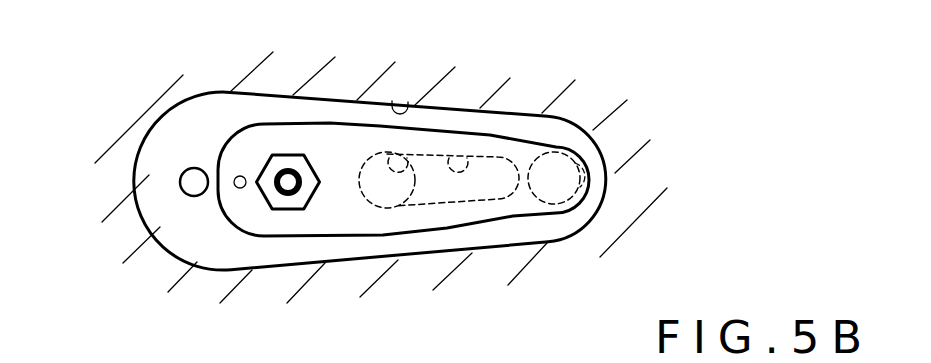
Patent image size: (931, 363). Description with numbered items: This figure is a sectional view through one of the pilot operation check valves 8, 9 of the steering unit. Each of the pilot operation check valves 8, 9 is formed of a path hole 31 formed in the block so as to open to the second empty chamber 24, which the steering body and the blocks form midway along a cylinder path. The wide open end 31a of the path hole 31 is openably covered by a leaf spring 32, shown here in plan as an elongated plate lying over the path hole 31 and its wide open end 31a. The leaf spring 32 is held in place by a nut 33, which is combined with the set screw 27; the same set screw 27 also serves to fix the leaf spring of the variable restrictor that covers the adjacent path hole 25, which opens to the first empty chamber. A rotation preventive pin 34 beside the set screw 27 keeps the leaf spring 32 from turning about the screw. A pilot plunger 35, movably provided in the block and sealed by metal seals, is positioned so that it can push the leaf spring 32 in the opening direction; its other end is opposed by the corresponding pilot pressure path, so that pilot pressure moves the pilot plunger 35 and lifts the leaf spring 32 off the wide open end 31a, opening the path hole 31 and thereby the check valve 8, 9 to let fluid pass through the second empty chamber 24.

The pilot operation check valve 8 is at (561, 141).
The pilot operation check valve 9 is at (561, 141).
The second empty chamber 24 is at (393, 106).
The path hole 25 is at (184, 178).
The set screw 27 is at (288, 175).
The path hole 31 is at (400, 150).
The wide open end 31a is at (452, 150).
The leaf spring 32 is at (527, 127).
The nut 33 is at (310, 175).
The rotation preventive pin 34 is at (239, 177).
The pilot plunger 35 is at (582, 188).